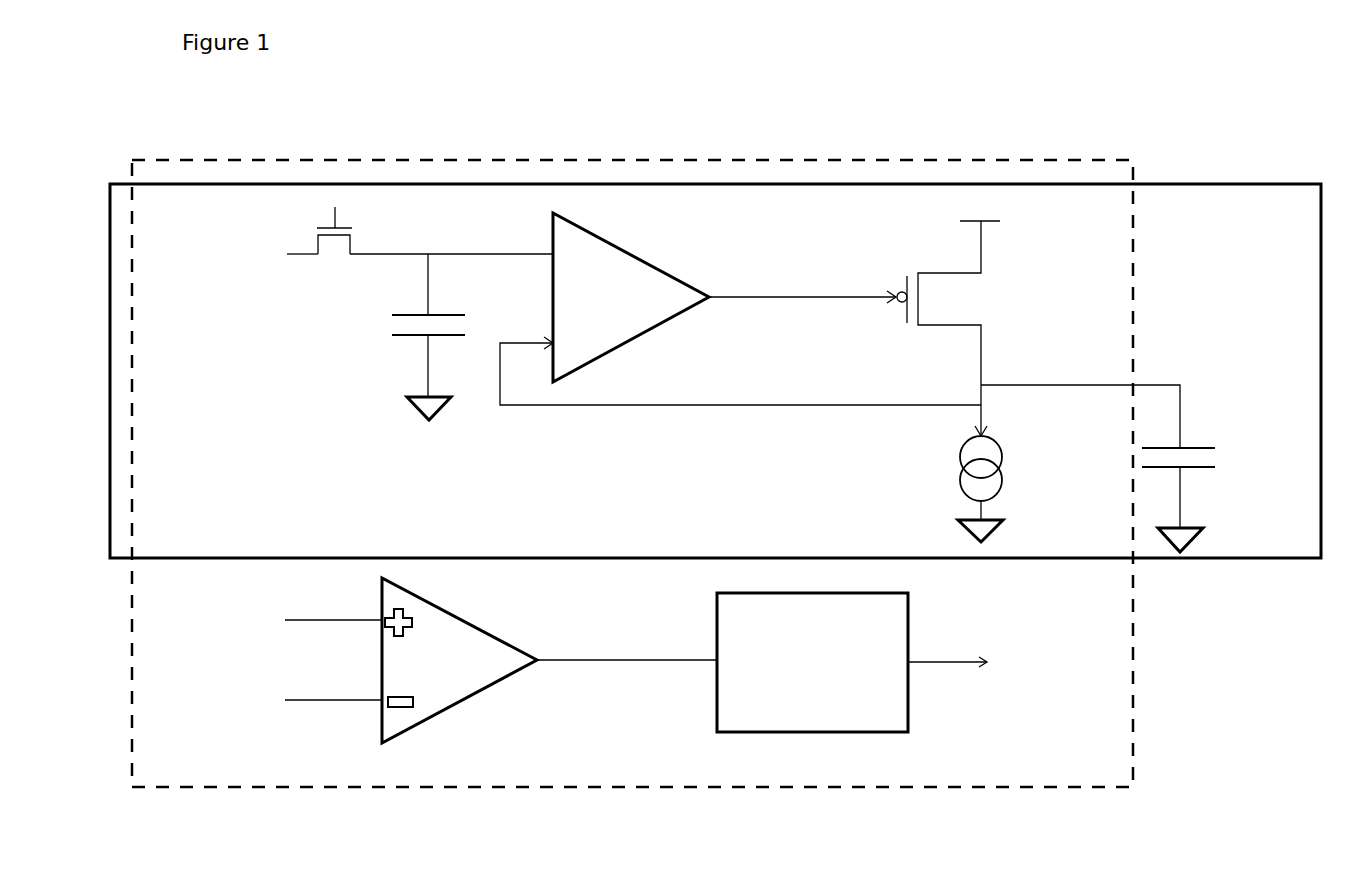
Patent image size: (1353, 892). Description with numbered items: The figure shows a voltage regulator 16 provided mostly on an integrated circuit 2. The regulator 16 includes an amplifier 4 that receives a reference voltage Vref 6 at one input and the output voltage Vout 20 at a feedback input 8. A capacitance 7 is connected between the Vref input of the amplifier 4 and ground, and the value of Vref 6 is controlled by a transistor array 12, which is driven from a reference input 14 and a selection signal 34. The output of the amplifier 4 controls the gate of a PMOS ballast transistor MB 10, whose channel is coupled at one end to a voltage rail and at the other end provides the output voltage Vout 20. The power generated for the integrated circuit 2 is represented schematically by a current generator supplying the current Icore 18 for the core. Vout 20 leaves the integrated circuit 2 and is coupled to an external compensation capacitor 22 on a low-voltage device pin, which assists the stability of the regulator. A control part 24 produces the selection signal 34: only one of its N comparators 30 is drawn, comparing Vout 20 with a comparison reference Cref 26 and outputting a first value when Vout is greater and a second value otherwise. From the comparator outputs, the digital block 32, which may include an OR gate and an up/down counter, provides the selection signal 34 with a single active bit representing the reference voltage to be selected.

The integrated circuit 2 is at (597, 160).
The amplifier 4 is at (632, 342).
The reference voltage Vref 6 is at (507, 254).
The capacitance C1 7 is at (438, 315).
The feedback input of amplifier 8 is at (527, 341).
The MOS ballast transistor MB 10 is at (938, 272).
The transistor array 12 is at (353, 246).
The reference input Ref 7:0 14 is at (237, 275).
The voltage regulator 16 is at (1159, 184).
The current Icore 18 is at (1003, 458).
The output voltage Vout 20 is at (1080, 385).
The compensation capacitor Cstab 22 is at (1210, 440).
The control part 24 is at (567, 760).
The comparator reference input Cref 7:0 26 is at (283, 612).
The comparator 30 is at (485, 628).
The digital block 32 is at (845, 732).
The selection signal Sel 7:0 34 is at (335, 217).